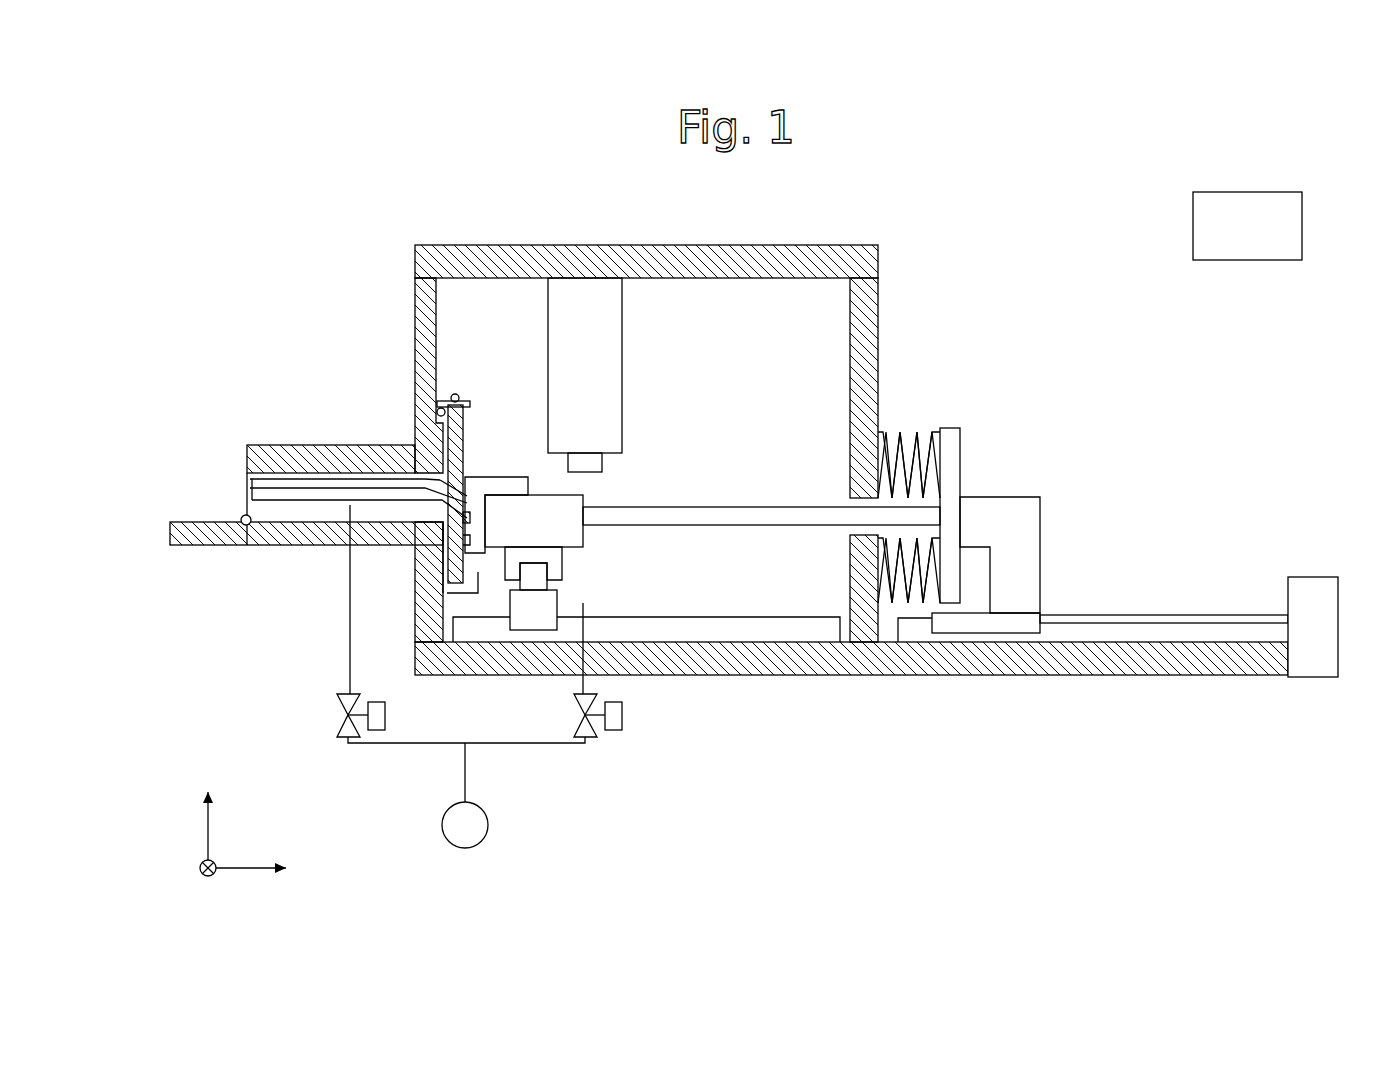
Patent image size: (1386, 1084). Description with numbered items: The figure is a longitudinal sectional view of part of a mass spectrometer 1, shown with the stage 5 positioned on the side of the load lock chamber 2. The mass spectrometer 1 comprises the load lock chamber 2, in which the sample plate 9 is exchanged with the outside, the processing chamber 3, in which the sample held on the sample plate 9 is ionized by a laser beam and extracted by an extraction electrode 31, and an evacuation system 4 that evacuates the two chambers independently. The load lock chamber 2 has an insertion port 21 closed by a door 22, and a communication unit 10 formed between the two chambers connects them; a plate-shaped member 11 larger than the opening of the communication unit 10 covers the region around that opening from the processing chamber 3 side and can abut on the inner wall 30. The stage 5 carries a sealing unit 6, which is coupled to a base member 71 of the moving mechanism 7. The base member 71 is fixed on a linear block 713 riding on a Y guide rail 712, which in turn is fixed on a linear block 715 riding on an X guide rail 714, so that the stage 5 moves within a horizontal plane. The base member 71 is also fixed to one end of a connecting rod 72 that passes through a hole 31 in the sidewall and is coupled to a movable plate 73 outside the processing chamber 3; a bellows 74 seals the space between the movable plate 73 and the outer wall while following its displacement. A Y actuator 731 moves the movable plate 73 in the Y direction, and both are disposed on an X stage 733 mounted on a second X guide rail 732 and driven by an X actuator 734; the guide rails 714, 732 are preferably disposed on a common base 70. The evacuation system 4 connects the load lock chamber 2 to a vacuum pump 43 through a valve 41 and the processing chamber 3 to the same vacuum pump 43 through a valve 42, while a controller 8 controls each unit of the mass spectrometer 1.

The mass spectrometer 1 is at (325, 232).
The load lock chamber 2 is at (272, 420).
The processing chamber 3 is at (803, 232).
The evacuation system 4 is at (575, 818).
The stage 5 is at (298, 503).
The sealing unit 6 is at (500, 477).
The moving mechanism 7 is at (1052, 393).
The controller 8 is at (1232, 262).
The sample plate 9 is at (340, 478).
The communication unit 10 is at (438, 507).
The plate-shaped member 11 is at (465, 432).
The insertion port 21 is at (247, 478).
The door 22 is at (212, 545).
The inner wall 30 is at (440, 322).
The extraction electrode 31 is at (622, 352).
The valve 41 is at (342, 737).
The valve 42 is at (618, 730).
The vacuum pump 43 is at (450, 838).
The common base 70 is at (775, 675).
The base member 71 is at (590, 498).
The connecting rod 72 is at (710, 507).
The movable plate 73 is at (962, 432).
The bellows 74 is at (910, 430).
The Y guide rail 712 is at (548, 577).
The linear block 713 is at (565, 566).
The X guide rail 714 is at (705, 615).
The linear block 715 is at (528, 632).
The Y actuator 731 is at (1035, 497).
The X guide rail 732 is at (1130, 613).
The X stage 733 is at (1012, 633).
The X actuator 734 is at (1322, 577).